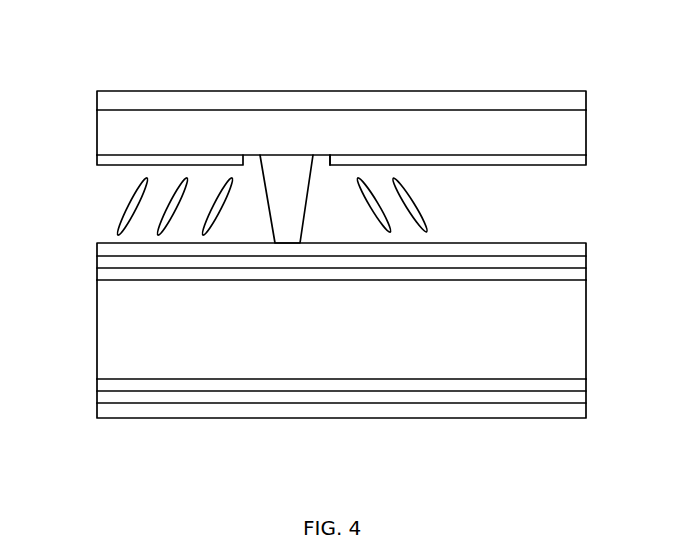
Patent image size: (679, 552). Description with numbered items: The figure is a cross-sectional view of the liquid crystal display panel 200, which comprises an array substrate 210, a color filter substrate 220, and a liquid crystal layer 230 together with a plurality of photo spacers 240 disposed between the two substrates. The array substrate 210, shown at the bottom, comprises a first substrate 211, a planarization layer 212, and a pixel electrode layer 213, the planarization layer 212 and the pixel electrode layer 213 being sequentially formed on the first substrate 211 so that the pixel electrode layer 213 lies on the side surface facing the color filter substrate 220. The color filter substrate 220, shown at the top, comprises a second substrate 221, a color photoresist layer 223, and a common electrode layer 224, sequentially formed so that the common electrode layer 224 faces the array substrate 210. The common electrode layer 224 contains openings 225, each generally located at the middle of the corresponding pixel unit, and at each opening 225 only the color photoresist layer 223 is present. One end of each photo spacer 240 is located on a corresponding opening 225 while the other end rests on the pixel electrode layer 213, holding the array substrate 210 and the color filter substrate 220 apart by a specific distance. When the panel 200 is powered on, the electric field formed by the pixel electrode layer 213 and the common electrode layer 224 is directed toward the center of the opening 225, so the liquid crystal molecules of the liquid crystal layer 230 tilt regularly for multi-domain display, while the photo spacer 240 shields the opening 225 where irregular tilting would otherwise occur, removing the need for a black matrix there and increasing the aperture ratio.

The liquid crystal display panel 200 is at (56, 39).
The array substrate 210 is at (70, 241).
The first substrate 211 is at (543, 418).
The planarization layer 212 is at (586, 332).
The pixel electrode layer 213 is at (562, 243).
The color filter substrate 220 is at (70, 163).
The second substrate 221 is at (548, 91).
The color photoresist layer 223 is at (586, 128).
The common electrode layer 224 is at (571, 165).
The opening 225 is at (319, 159).
The liquid crystal layer 230 is at (70, 238).
The photo spacer 240 is at (285, 173).